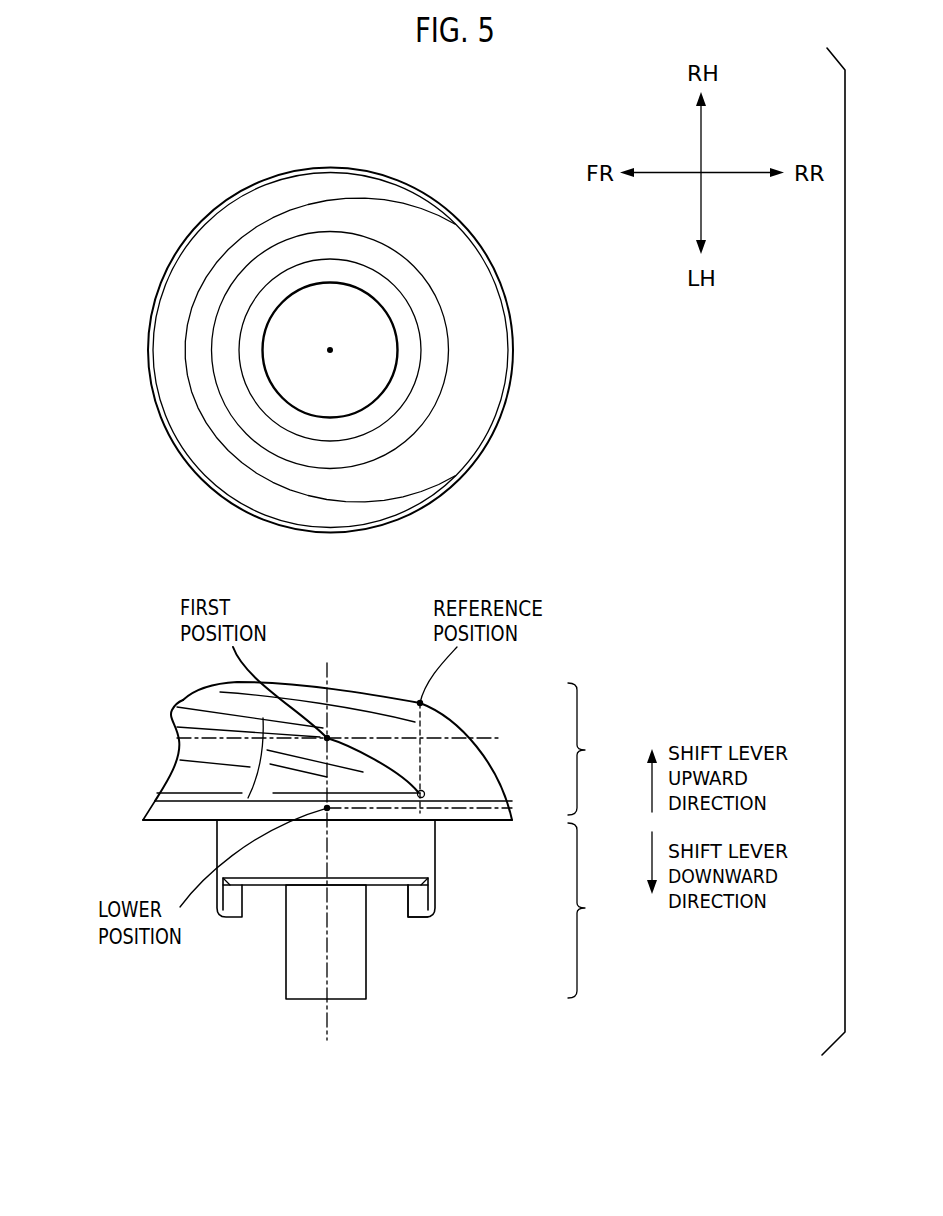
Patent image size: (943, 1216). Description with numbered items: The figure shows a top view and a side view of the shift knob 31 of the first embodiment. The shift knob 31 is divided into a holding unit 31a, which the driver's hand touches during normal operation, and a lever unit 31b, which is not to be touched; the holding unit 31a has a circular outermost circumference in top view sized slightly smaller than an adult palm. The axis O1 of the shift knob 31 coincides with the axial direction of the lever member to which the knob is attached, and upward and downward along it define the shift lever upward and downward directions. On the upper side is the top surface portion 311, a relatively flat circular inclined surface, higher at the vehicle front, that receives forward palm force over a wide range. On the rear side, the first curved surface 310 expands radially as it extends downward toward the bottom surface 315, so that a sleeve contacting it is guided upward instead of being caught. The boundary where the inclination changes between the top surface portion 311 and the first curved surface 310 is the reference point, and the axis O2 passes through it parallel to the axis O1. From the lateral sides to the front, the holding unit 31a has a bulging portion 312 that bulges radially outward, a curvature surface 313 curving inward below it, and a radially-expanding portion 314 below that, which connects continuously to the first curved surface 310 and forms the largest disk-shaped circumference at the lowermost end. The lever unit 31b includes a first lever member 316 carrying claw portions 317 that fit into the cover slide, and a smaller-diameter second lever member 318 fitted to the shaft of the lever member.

The shift knob 31 is at (470, 211).
The first curved surface 310 is at (483, 385).
The top surface portion 311 is at (360, 306).
The bulging portion 312 is at (187, 307).
The curvature surface 313 is at (172, 325).
The radially-expanding portion 314 is at (150, 362).
The bottom surface 315 is at (172, 822).
The first lever member 316 is at (422, 847).
The claw portions 317 is at (422, 900).
The second lever member 318 is at (286, 943).
The holding unit 31a is at (598, 749).
The lever unit 31b is at (598, 910).
The axis O1 is at (333, 349).
The axis O2 is at (421, 728).